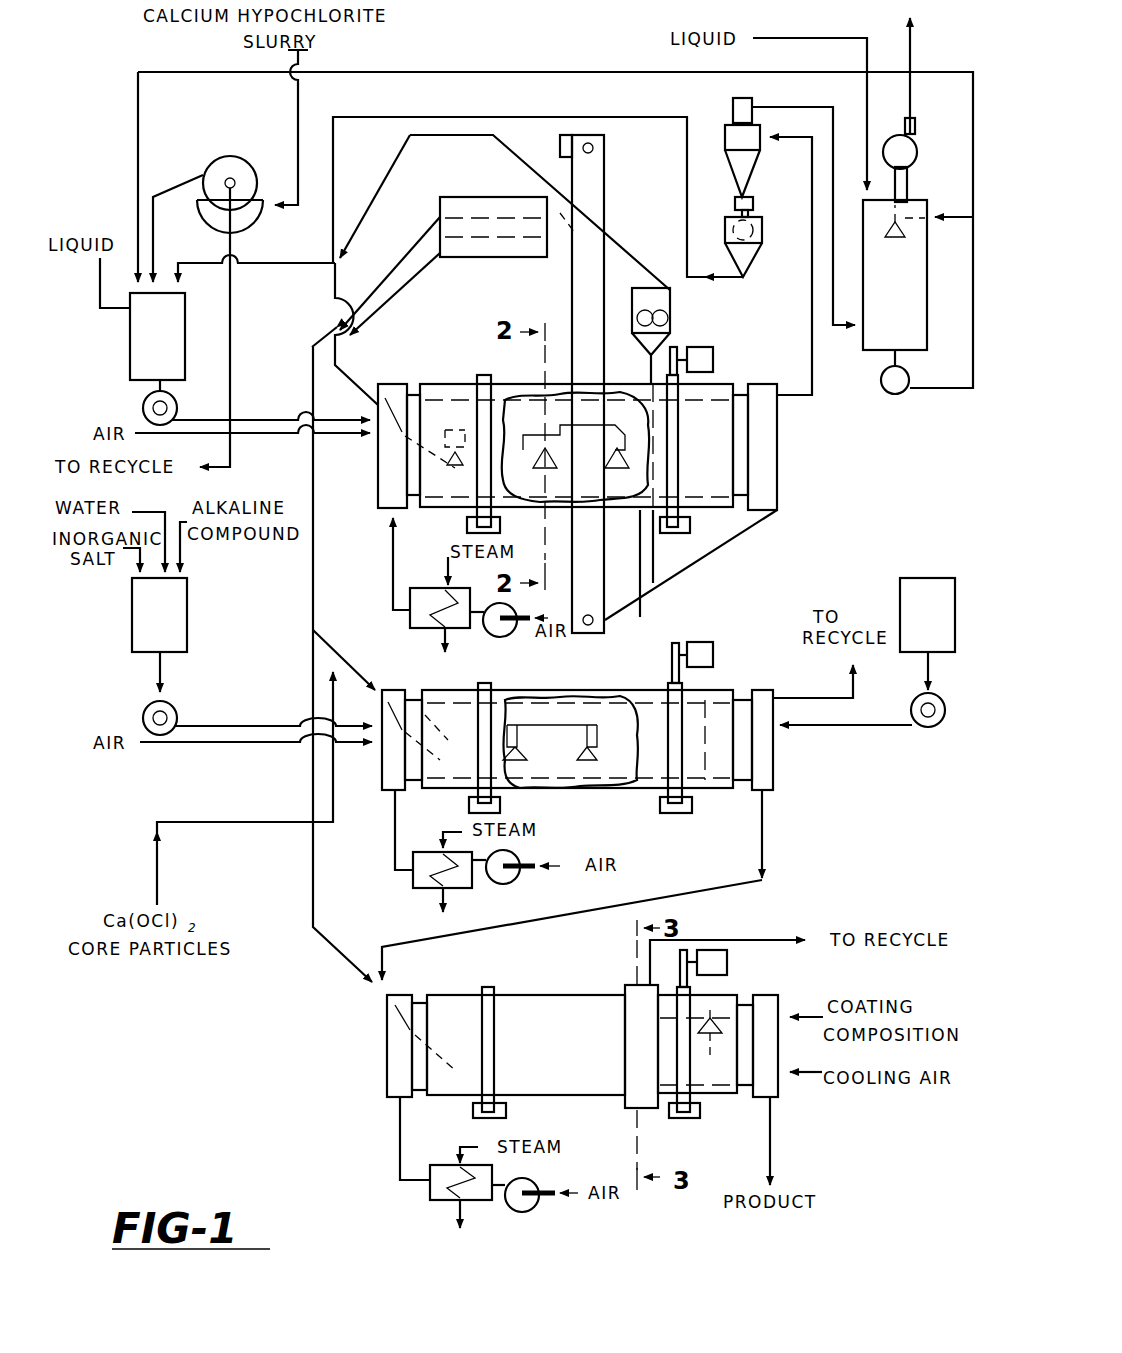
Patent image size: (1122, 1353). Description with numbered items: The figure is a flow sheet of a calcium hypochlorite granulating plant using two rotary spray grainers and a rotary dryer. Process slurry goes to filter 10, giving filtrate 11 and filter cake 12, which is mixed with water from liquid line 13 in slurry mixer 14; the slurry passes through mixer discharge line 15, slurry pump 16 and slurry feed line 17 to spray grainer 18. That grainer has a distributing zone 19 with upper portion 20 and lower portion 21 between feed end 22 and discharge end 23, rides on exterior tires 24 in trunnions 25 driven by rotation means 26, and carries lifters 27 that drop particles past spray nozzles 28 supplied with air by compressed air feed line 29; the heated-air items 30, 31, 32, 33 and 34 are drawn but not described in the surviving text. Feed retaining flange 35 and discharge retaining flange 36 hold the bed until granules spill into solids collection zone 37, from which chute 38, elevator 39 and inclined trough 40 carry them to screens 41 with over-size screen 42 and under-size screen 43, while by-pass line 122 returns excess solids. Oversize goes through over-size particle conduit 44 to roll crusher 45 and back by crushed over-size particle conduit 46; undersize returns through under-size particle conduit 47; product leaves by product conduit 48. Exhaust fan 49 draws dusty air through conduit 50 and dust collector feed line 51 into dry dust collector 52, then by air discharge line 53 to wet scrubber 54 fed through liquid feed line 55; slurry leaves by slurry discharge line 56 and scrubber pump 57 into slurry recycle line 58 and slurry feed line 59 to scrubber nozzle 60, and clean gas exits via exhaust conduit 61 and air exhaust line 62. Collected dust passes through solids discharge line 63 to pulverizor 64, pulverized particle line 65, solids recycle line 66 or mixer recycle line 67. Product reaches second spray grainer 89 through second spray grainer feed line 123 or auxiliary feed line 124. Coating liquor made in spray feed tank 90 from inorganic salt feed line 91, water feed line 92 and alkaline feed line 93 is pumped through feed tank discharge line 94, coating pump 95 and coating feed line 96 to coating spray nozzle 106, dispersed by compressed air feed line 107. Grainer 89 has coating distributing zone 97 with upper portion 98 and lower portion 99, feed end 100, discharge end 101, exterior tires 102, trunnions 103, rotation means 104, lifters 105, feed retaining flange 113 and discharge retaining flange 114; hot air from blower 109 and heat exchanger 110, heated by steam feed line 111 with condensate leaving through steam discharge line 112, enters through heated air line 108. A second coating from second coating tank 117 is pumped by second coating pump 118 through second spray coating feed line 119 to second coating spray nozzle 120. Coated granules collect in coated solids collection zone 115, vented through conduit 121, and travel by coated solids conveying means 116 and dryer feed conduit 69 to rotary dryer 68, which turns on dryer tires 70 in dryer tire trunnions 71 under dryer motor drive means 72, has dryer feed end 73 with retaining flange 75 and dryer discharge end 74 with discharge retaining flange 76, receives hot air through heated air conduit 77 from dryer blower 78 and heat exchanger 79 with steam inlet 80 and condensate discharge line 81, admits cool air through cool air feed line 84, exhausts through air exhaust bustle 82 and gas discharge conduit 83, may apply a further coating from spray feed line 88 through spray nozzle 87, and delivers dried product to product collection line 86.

The filter 10 is at (240, 170).
The filtrate 11 is at (232, 310).
The filter cake 12 is at (178, 186).
The liquid line 13 is at (98, 300).
The slurry mixer 14 is at (130, 350).
The mixer discharge line 15 is at (155, 390).
The slurry pump 16 is at (175, 400).
The slurry feed line 17 is at (252, 418).
The spray grainer 18 is at (515, 392).
The distributing zone 19 is at (448, 400).
The upper portion 20 is at (602, 410).
The lower portion 21 is at (605, 512).
The feed end 22 is at (378, 492).
The discharge end 23 is at (778, 468).
The exterior tires 24 is at (484, 375).
The trunnions 25 is at (500, 526).
The motor driven rotation means 26 is at (712, 348).
The lifters 27 is at (427, 395).
The spray nozzles 28 is at (525, 470).
The compressed air feed line 29 is at (365, 437).
The drain line 30 is at (392, 574).
The air inlet 31 is at (520, 640).
The heat exchanger 32 is at (413, 630).
The steam inlet 33 is at (440, 568).
The blower 34 is at (503, 637).
The feed retaining flange 35 is at (445, 470).
The discharge retaining flange 36 is at (735, 490).
The solids collection zone 37 is at (778, 505).
The chute 38 is at (720, 545).
The elevator 39 is at (604, 586).
The inclined trough 40 is at (545, 160).
The screens 41 is at (475, 197).
The over-size screen 42 is at (452, 197).
The under-size screen 43 is at (520, 243).
The over-size particle conduit 44 is at (625, 262).
The roll crusher 45 is at (670, 305).
The crushed over-size particle conduit 46 is at (652, 540).
The under-size particle conduit 47 is at (413, 283).
The product conduit 48 is at (330, 312).
The exhaust fan 49 is at (912, 145).
The conduit 50 is at (800, 380).
The dust collector feed line 51 is at (812, 325).
The dry dust collector 52 is at (755, 167).
The air discharge line 53 is at (838, 330).
The wet scrubber 54 is at (870, 352).
The liquid feed line 55 is at (868, 104).
The slurry discharge line 56 is at (902, 368).
The scrubber pump 57 is at (893, 396).
The slurry recycle line 58 is at (972, 322).
The slurry feed line 59 is at (952, 228).
The scrubber nozzle 60 is at (893, 245).
The exhaust conduit 61 is at (908, 188).
The air exhaust line 62 is at (912, 40).
The solids discharge line 63 is at (754, 205).
The pulverizor 64 is at (762, 232).
The pulverized particle line 65 is at (742, 278).
The solids recycle line 66 is at (334, 285).
The mixer recycle line 67 is at (280, 262).
The rotary dryer 68 is at (575, 995).
The dryer feed conduit 69 is at (312, 883).
The dryer tires 70 is at (488, 987).
The dryer tire trunnions 71 is at (506, 1112).
The dryer motor drive means 72 is at (727, 960).
The dryer feed end 73 is at (387, 1058).
The dryer discharge end 74 is at (778, 980).
The retaining flange 75 is at (460, 1080).
The discharge retaining flange 76 is at (733, 1093).
The heated air conduit 77 is at (398, 1150).
The dryer blower 78 is at (520, 1212).
The heat exchanger 79 is at (430, 1195).
The steam inlet 80 is at (465, 1145).
The condensate discharge line 81 is at (450, 1225).
The air exhaust bustle 82 is at (625, 1110).
The gas discharge conduit 83 is at (760, 940).
The cool air feed line 84 is at (808, 1075).
The product collection line 86 is at (772, 1145).
The spray nozzle 87 is at (710, 1055).
The spray feed line 88 is at (805, 1025).
The second spray grainer 89 is at (635, 690).
The spray feed tank 90 is at (187, 623).
The inorganic salt feed line 91 is at (127, 548).
The water feed line 92 is at (148, 510).
The alkaline feed line 93 is at (183, 560).
The feed tank discharge line 94 is at (162, 673).
The coating pump 95 is at (145, 710).
The coating feed line 96 is at (248, 724).
The coating distributing zone 97 is at (580, 715).
The upper portion 98 is at (555, 696).
The lower portion 99 is at (620, 785).
The feed end 100 is at (382, 775).
The discharge end 101 is at (773, 790).
The exterior tires 102 is at (478, 690).
The trunnions 103 is at (500, 805).
The motor driven rotation means 104 is at (705, 642).
The lifters 105 is at (705, 730).
The coating spray nozzle 106 is at (525, 755).
The compressed air feed line 107 is at (196, 745).
The heated air line 108 is at (393, 852).
The blower 109 is at (508, 885).
The heat exchanger 110 is at (413, 885).
The steam feed line 111 is at (448, 828).
The steam discharge line 112 is at (438, 900).
The feed retaining flange 113 is at (432, 702).
The discharge retaining flange 114 is at (735, 700).
The coated solids collection zone 115 is at (776, 762).
The coated solids conveying means 116 is at (765, 853).
The second coating tank 117 is at (945, 655).
The second coating pump 118 is at (930, 728).
The second spray coating feed line 119 is at (877, 727).
The second coating spray nozzle 120 is at (598, 735).
The conduit 121 is at (820, 676).
The by-pass line 122 is at (380, 180).
The second spray grainer feed line 123 is at (350, 660).
The auxiliary feed line 124 is at (207, 825).